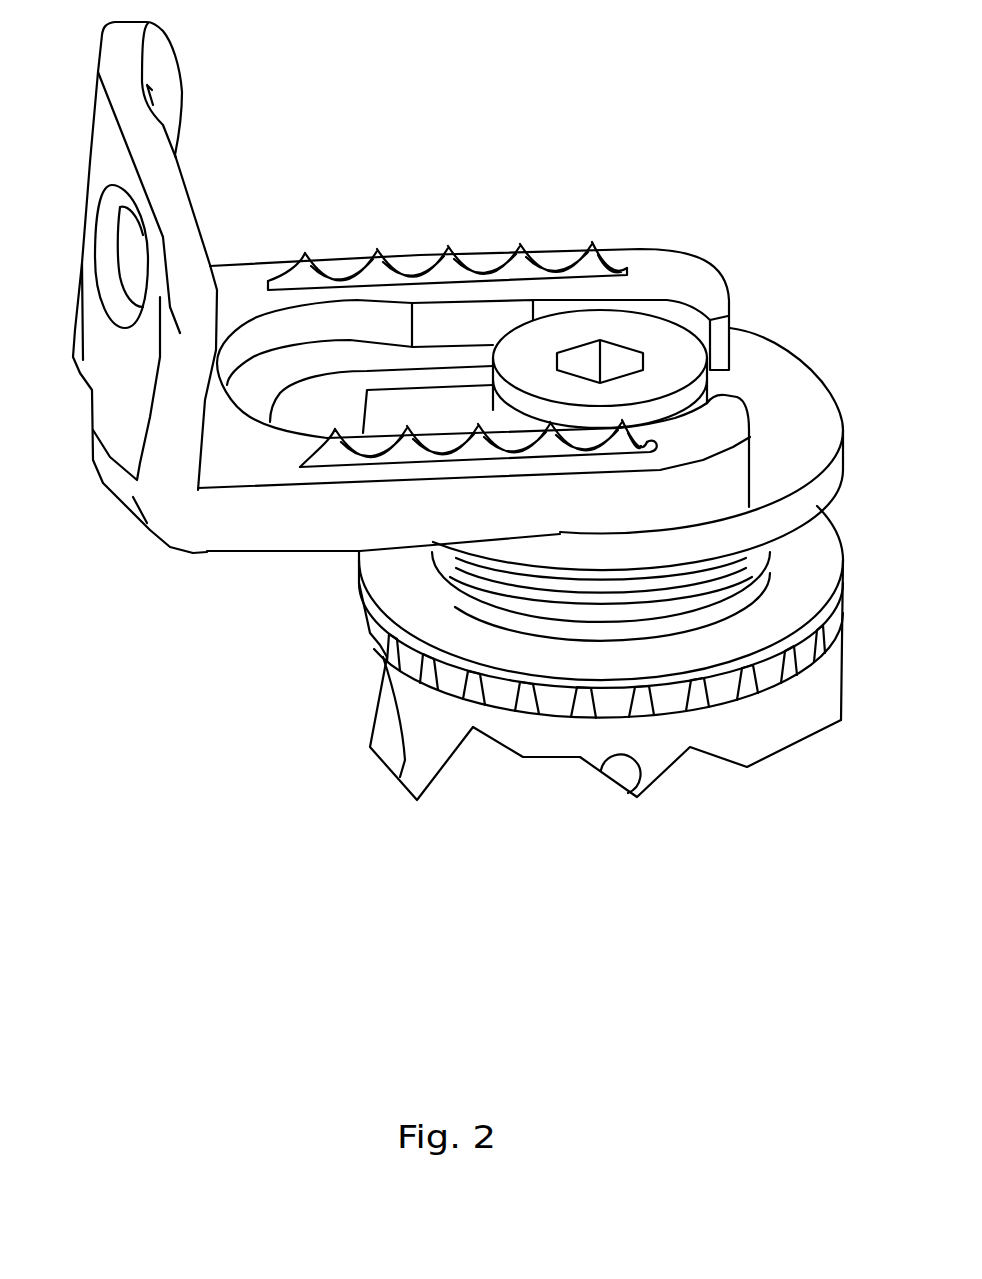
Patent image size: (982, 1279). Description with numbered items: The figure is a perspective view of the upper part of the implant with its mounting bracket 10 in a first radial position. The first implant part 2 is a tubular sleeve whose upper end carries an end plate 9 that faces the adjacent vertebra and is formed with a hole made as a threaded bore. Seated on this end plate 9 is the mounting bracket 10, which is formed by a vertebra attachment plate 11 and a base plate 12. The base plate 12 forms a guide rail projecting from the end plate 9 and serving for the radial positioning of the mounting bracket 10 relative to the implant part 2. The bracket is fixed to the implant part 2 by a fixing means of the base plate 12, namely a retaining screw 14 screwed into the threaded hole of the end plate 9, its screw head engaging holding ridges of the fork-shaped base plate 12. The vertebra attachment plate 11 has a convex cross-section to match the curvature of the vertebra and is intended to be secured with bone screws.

The first implant part 2 is at (793, 713).
The end plate 9 is at (788, 414).
The mounting bracket 10 is at (218, 212).
The vertebra attachment plate 11 is at (192, 287).
The base plate 12 is at (230, 447).
The retaining screw 14 is at (587, 335).